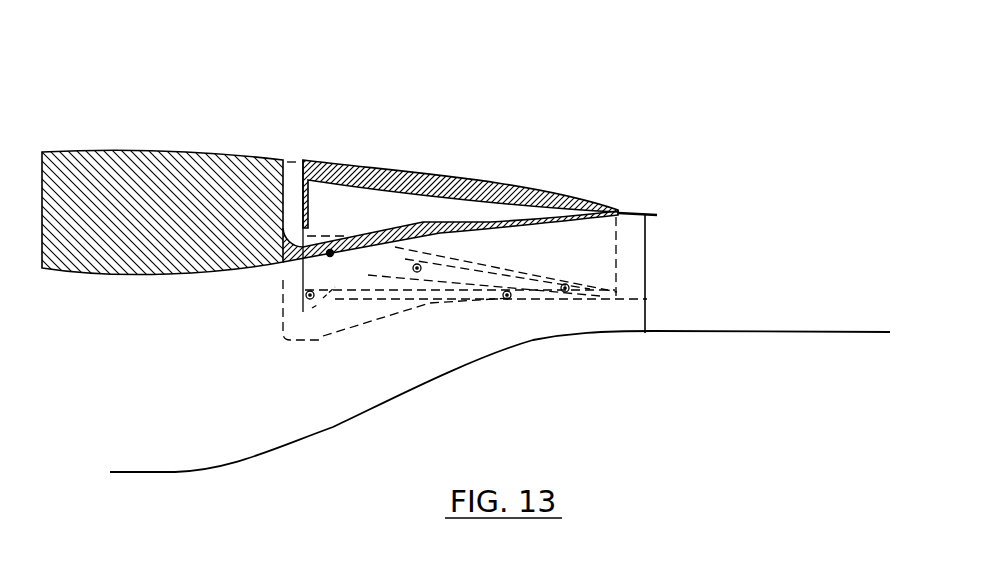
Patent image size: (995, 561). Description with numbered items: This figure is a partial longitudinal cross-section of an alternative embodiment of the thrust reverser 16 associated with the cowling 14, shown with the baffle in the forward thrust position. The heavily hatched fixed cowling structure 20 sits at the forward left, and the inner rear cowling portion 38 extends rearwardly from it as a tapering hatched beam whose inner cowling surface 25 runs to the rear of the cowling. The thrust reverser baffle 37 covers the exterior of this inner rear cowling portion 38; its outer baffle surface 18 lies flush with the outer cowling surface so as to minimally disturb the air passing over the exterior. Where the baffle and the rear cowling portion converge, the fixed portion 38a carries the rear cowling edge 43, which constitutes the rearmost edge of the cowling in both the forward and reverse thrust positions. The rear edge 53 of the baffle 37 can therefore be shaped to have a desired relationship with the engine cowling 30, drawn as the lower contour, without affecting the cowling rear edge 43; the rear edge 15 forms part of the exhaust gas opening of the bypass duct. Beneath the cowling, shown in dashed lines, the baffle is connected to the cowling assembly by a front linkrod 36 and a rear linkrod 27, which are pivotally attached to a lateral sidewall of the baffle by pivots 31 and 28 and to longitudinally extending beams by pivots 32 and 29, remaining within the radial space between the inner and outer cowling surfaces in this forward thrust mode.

The cowling 14 is at (231, 85).
The fixed cowling structure 20 is at (137, 175).
The outer baffle surface 18 is at (345, 137).
The thrust reverser baffle 37 is at (447, 185).
The inner rear cowling portion 38 is at (232, 270).
The fixed portion 38a is at (625, 218).
The rear edge of the thrust reverser baffle 53 is at (630, 200).
The rear cowling edge 43 is at (673, 216).
The engine cowling 30 is at (757, 352).
The rear edge of the thrust reverser baffle 15 is at (97, 313).
The thrust reverser 16 is at (112, 400).
The pivot 31 is at (306, 295).
The inner cowling surface 25 is at (354, 273).
The pivot 28 is at (412, 270).
The front linkrod 36 is at (462, 300).
The pivot 32 is at (507, 300).
The rear linkrod 27 is at (522, 290).
The pivot 29 is at (566, 292).